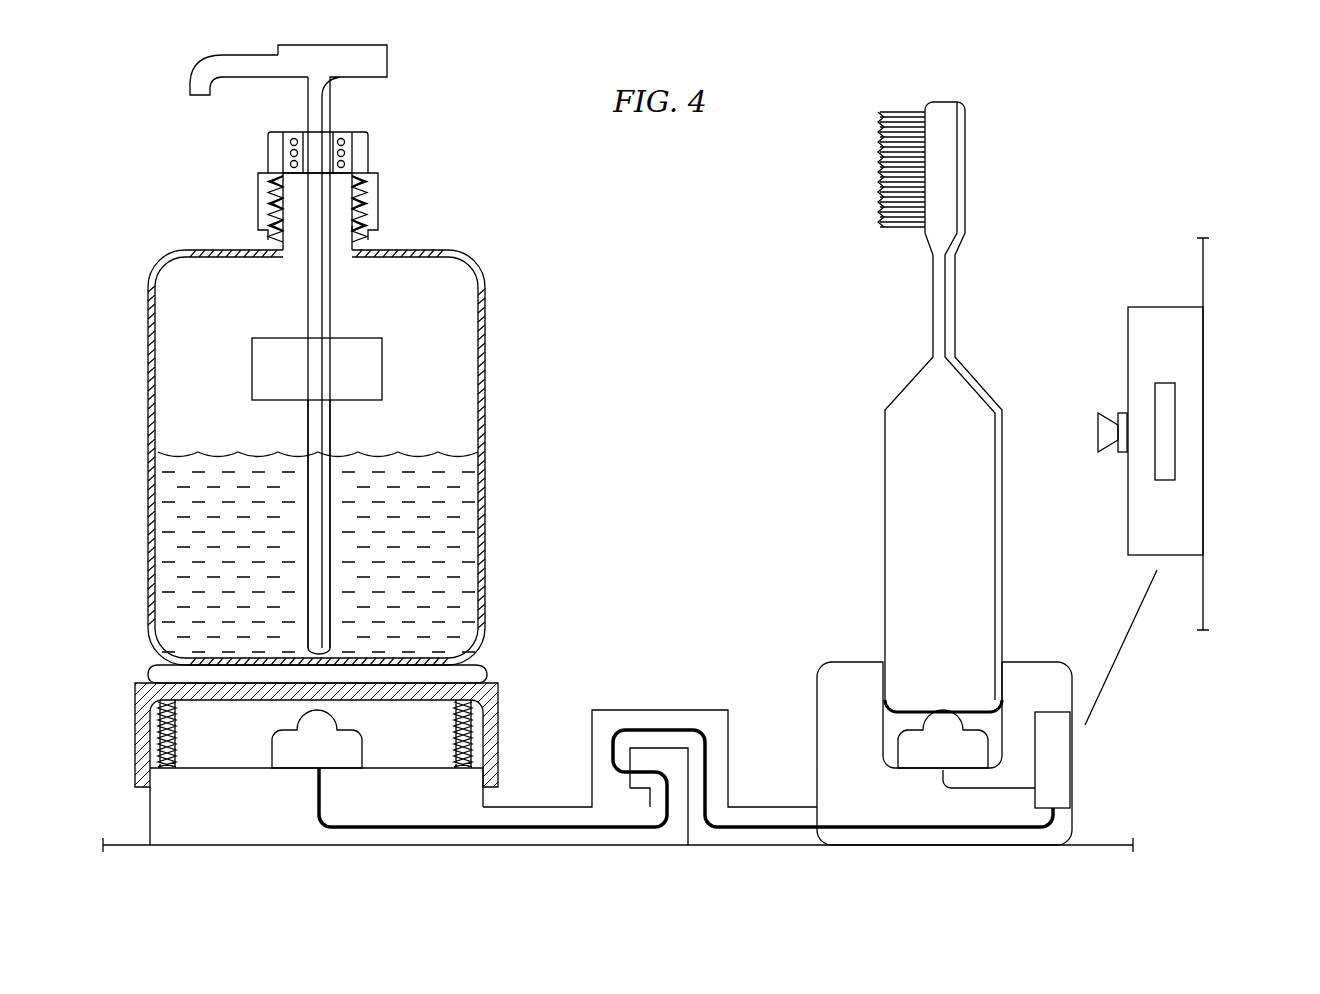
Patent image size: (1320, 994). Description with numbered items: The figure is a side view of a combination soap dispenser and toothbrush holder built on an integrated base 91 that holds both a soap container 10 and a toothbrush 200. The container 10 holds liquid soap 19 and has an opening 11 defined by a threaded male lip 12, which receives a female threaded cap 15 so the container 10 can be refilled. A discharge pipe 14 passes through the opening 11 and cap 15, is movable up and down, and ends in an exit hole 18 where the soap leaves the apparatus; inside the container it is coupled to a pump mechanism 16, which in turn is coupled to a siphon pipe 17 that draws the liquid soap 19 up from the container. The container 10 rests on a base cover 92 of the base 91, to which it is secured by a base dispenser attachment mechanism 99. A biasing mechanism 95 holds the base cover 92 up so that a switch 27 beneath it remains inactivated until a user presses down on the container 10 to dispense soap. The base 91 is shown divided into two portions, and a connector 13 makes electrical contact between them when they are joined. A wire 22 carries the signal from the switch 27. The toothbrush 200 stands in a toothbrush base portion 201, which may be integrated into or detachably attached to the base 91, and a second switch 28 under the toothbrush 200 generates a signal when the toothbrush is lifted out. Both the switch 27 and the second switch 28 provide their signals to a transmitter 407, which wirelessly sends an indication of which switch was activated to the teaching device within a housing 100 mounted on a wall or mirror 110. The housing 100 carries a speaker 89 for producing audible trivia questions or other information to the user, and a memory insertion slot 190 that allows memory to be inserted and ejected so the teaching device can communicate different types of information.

The container 10 is at (145, 367).
The opening 11 is at (292, 258).
The threaded male lip 12 is at (352, 228).
The connector 13 is at (673, 703).
The discharge pipe 14 is at (331, 108).
The female threaded cap 15 is at (378, 204).
The pump mechanism 16 is at (252, 370).
The siphon pipe 17 is at (302, 422).
The exit hole 18 is at (198, 96).
The liquid soap 19 is at (417, 455).
The wire 22 is at (399, 824).
The switch 27 is at (288, 768).
The second switch 28 is at (928, 768).
The speaker 89 is at (1097, 430).
The base 91 is at (151, 804).
The base cover 92 is at (134, 748).
The biasing mechanism 95 is at (177, 733).
The base dispenser attachment mechanism 99 is at (148, 676).
The housing 100 is at (1126, 365).
The wall or mirror 110 is at (1251, 273).
The memory insertion slot 190 is at (1166, 383).
The toothbrush 200 is at (925, 567).
The toothbrush base portion 201 is at (812, 751).
The transmitter 407 is at (1068, 762).